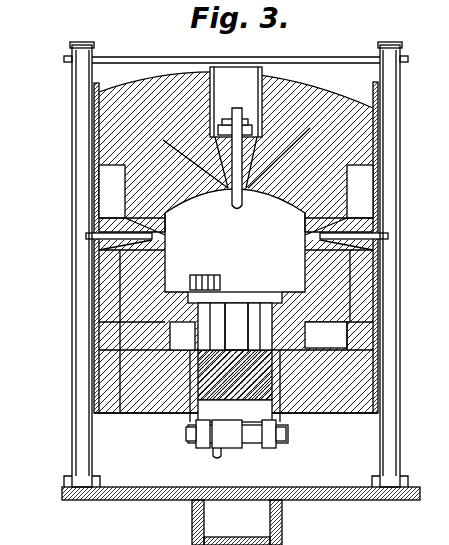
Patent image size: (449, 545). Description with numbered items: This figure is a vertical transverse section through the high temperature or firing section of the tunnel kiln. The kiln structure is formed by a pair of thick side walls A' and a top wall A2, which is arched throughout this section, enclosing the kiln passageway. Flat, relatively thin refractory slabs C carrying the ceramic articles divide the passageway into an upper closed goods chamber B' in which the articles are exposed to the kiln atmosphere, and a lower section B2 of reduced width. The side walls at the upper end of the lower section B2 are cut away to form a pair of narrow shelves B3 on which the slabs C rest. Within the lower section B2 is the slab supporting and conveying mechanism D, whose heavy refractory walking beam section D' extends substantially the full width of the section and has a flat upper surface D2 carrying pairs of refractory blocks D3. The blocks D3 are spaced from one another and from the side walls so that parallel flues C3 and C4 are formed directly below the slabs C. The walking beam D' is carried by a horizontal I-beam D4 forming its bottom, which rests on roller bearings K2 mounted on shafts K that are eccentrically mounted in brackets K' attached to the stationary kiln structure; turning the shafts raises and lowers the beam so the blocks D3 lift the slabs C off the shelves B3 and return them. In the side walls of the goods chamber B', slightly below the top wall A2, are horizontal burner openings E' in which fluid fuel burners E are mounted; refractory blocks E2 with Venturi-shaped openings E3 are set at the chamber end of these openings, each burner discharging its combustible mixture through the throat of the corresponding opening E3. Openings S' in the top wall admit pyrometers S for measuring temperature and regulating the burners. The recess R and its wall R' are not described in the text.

The top wall A2 is at (172, 150).
The side walls A' is at (236, 279).
The openings S' is at (281, 126).
The pyrometers S is at (243, 167).
The burner openings E' is at (237, 197).
The fluid fuel burners E is at (233, 223).
The refractory blocks E2 is at (166, 232).
The Venturi-shaped openings E3 is at (170, 243).
The upper closed goods chamber B' is at (235, 252).
The shelves B3 is at (192, 282).
The lower section B2 is at (222, 448).
The slabs C is at (250, 292).
The flue C3 is at (148, 413).
The flue C4 is at (222, 338).
The slab supporting and conveying mechanism D is at (263, 326).
The walking beam section D' is at (266, 398).
The flat upper surface D2 is at (232, 348).
The refractory blocks D3 is at (262, 314).
The I-beam D4 is at (235, 411).
The recess R is at (326, 335).
The recess wall R' is at (390, 336).
The shafts K is at (238, 456).
The brackets K' is at (214, 449).
The roller bearings K2 is at (200, 448).